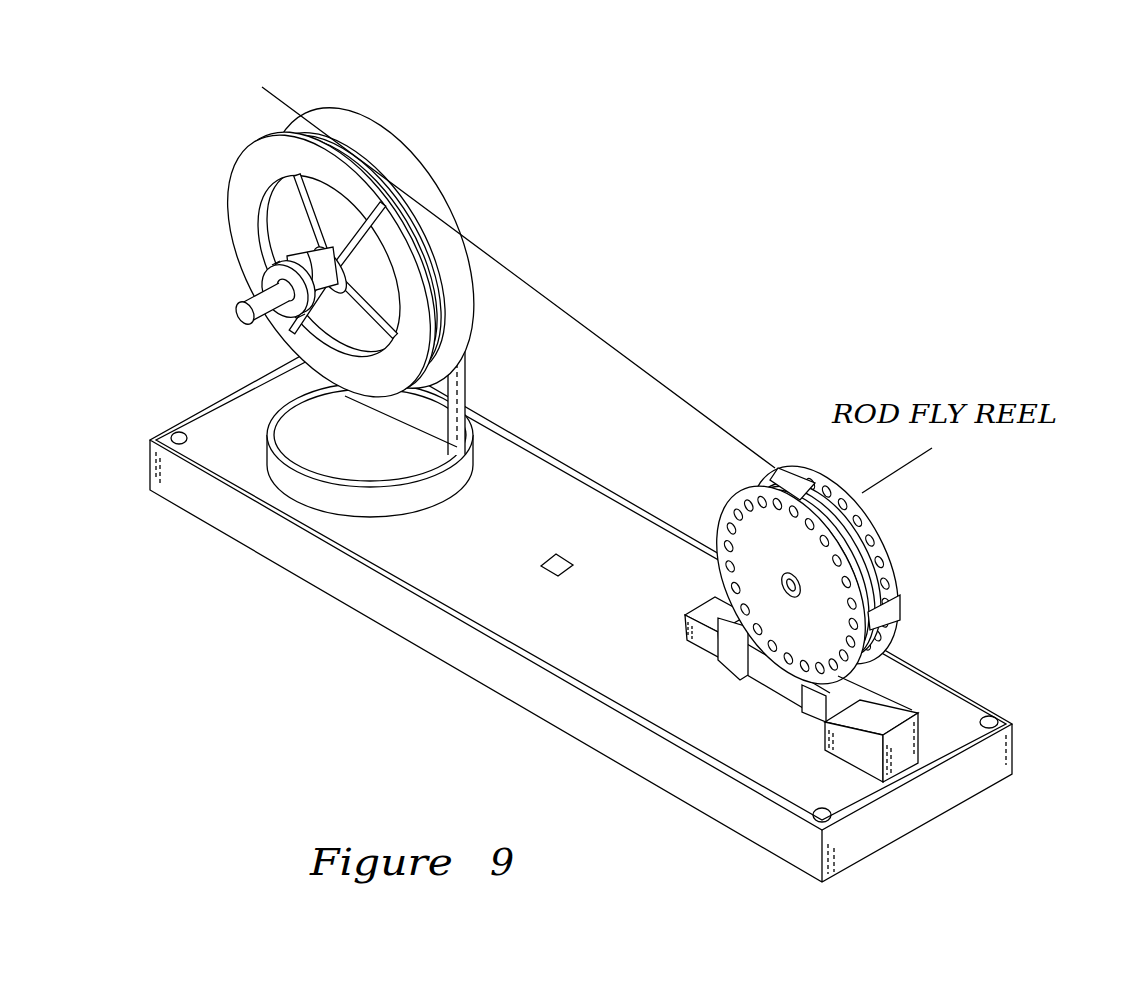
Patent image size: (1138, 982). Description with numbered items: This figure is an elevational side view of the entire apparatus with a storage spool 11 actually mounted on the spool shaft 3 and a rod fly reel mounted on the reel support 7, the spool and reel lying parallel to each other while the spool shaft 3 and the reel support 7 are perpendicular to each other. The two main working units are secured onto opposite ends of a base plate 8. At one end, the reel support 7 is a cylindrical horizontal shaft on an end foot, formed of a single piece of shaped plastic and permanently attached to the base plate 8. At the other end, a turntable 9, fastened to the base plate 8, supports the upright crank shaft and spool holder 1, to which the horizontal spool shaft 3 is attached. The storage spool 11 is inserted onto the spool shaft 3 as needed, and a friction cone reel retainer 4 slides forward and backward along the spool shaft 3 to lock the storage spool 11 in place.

The upright crank shaft and spool holder 1 is at (467, 367).
The spool shaft 3 is at (245, 284).
The friction cone reel retainer 4 is at (287, 262).
The reel support 7 is at (923, 737).
The base plate 8 is at (207, 392).
The turntable 9 is at (280, 472).
The storage spool 11 is at (262, 87).